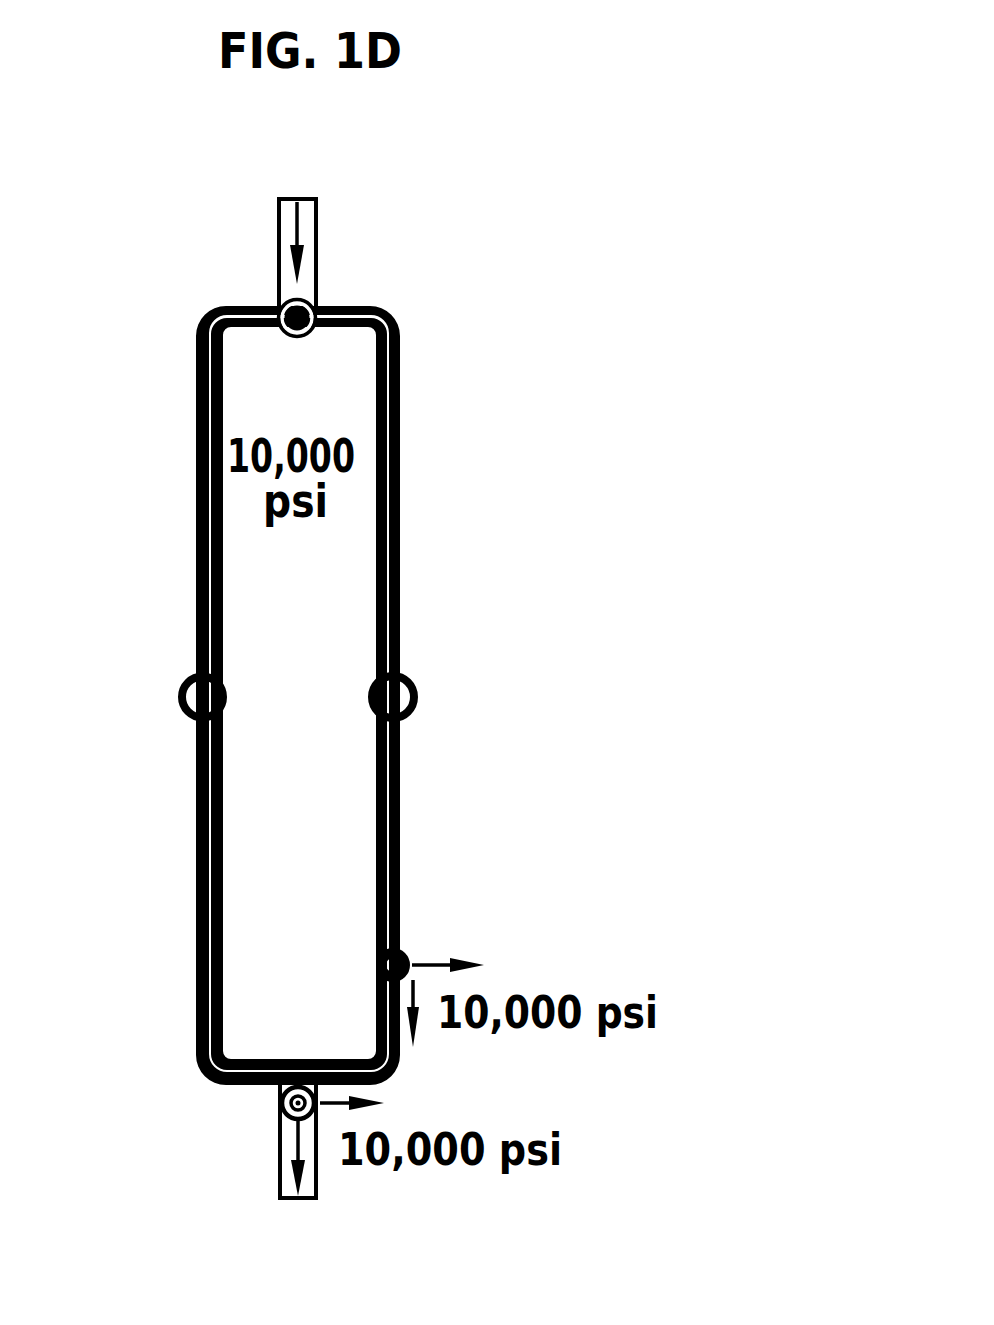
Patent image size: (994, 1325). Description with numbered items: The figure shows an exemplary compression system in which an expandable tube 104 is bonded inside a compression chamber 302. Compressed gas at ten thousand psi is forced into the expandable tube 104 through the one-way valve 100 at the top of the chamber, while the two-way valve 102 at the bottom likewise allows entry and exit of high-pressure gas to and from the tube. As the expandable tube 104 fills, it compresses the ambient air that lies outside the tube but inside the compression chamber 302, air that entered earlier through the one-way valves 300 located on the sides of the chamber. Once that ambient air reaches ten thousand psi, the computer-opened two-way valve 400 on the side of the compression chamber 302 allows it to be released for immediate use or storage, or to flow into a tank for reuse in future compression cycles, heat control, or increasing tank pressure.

The one-way valve 100 is at (316, 305).
The two-way valve 102 is at (272, 1107).
The expandable tube 104 is at (386, 465).
The one-way valves 300 is at (422, 676).
The compression chamber 302 is at (400, 372).
The two-way valve 400 is at (400, 950).